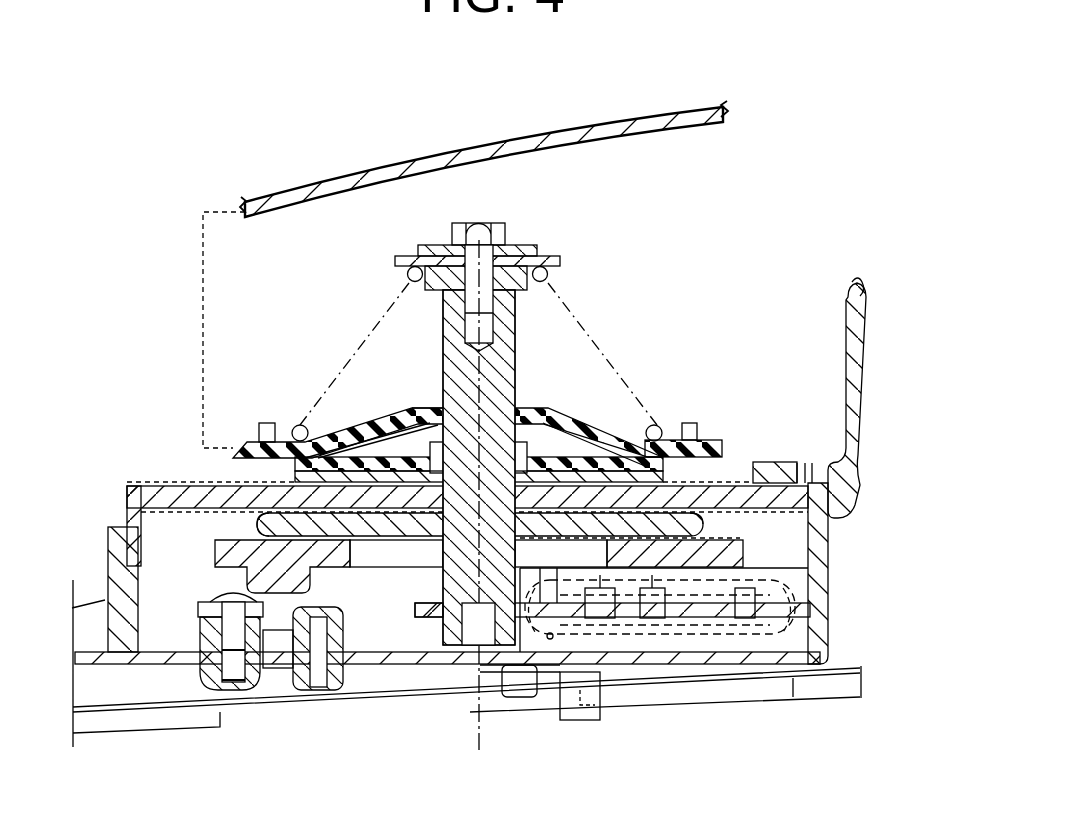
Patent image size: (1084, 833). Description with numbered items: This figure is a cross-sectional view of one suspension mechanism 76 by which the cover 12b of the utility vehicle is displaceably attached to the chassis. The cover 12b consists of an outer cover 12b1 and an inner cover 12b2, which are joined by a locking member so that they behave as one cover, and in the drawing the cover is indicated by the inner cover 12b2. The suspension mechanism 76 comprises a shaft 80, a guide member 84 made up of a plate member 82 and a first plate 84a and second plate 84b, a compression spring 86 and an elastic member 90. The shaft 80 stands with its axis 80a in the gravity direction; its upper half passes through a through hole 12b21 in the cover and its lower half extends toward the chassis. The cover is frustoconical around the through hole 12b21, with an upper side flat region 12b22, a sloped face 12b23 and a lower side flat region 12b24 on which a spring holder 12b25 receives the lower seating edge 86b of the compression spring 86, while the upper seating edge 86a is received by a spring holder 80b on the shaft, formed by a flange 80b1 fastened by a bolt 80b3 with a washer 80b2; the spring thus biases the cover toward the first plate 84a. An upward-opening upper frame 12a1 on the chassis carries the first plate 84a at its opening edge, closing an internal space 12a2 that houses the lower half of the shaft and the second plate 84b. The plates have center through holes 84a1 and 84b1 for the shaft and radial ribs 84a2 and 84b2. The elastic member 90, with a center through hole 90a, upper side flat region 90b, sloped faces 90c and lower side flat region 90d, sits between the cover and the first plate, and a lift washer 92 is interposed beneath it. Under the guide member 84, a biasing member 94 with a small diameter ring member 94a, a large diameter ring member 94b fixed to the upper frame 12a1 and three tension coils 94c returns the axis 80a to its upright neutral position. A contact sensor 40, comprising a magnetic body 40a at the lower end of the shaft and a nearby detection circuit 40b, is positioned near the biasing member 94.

The upper frame 12a1 is at (829, 622).
The internal space 12a2 is at (212, 597).
The cover 12b is at (553, 309).
The outer cover 12b1 is at (697, 130).
The inner cover 12b2 is at (528, 363).
The through hole 12b21 is at (512, 400).
The upper side flat region 12b22 is at (540, 394).
The sloped face 12b23 is at (607, 434).
The lower side flat region 12b24 is at (683, 423).
The spring holder 12b25 is at (258, 442).
The contact sensor 40 is at (507, 701).
The magnetic body 40a is at (470, 647).
The detection circuit 40b is at (580, 722).
The suspension mechanism 76 is at (619, 294).
The shaft 80 is at (533, 407).
The axis 80a is at (477, 376).
The spring holder 80b is at (534, 217).
The flange 80b1 is at (532, 256).
The washer 80b2 is at (498, 245).
The bolt 80b3 is at (480, 223).
The plate member 82 is at (262, 527).
The guide member 84 is at (579, 552).
The first plate 84a is at (579, 536).
The through hole 84a1 is at (404, 498).
The ribs 84a2 is at (545, 487).
The second plate 84b is at (558, 578).
The through hole 84b1 is at (363, 557).
The ribs 84b2 is at (413, 543).
The compression spring 86 is at (456, 349).
The upper seating edge 86a is at (407, 272).
The lower seating edge 86b is at (300, 424).
The elastic member 90 is at (548, 413).
The center through hole 90a is at (513, 475).
The upper side flat region 90b is at (430, 440).
The sloped faces 90c is at (402, 432).
The lower side flat region 90d is at (368, 437).
The lift washer 92 is at (664, 466).
The biasing member 94 is at (667, 674).
The small diameter ring member 94a is at (552, 639).
The large diameter ring member 94b is at (772, 662).
The tension coils 94c is at (728, 645).